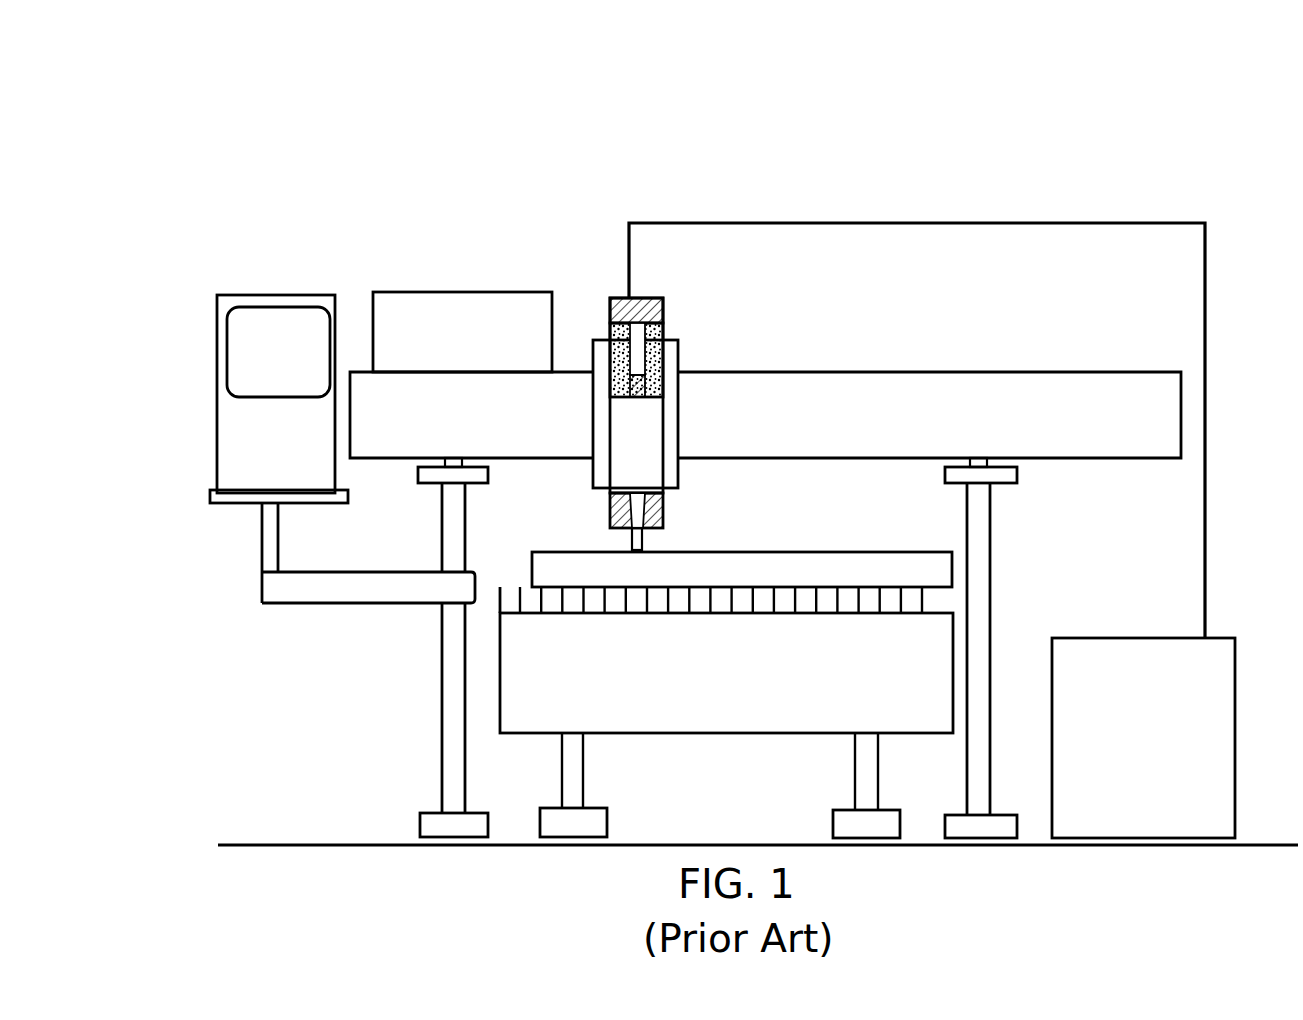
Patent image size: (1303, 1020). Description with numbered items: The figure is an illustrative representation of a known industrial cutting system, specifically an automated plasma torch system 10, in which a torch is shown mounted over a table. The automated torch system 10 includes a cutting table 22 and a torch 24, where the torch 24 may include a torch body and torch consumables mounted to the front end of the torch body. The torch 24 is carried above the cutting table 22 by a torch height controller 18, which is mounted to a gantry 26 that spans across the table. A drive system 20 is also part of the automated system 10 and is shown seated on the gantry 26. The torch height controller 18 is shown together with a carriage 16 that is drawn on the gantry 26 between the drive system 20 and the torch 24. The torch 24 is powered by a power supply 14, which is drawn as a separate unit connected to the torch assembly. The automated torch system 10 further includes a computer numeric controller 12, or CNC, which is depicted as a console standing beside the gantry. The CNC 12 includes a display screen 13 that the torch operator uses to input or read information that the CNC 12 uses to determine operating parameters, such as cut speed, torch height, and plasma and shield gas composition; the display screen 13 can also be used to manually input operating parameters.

The automated torch system 10 is at (739, 84).
The computer numeric controller 12 is at (217, 445).
The display screen 13 is at (238, 337).
The power supply 14 is at (1240, 683).
The carriage 16 is at (653, 440).
The torch height controller 18 is at (665, 320).
The drive system 20 is at (418, 291).
The cutting table 22 is at (730, 735).
The torch 24 is at (643, 540).
The gantry 26 is at (1072, 373).